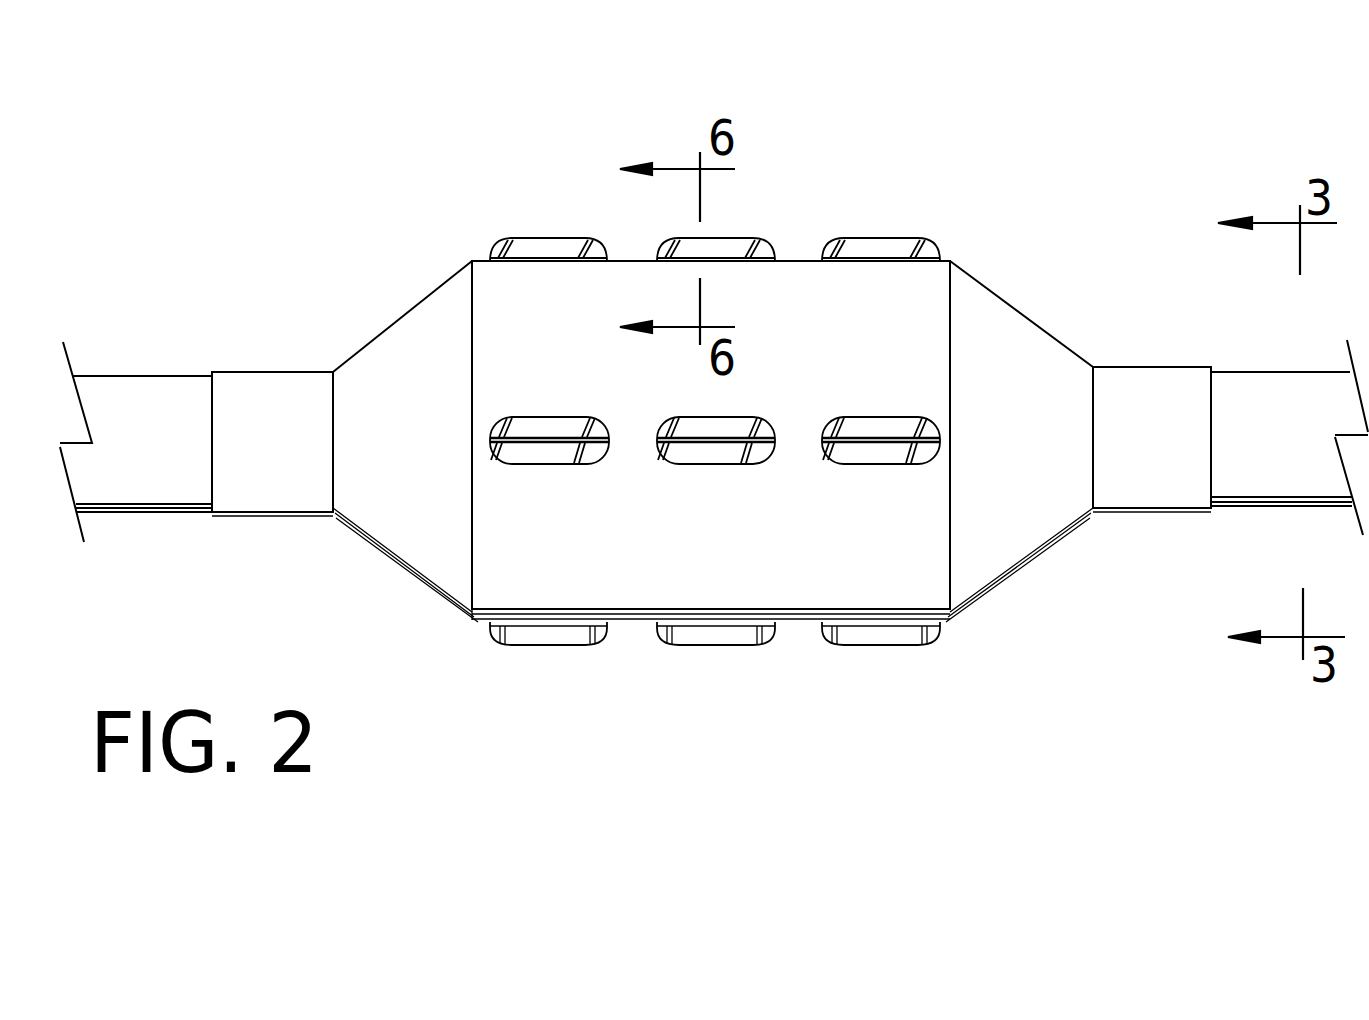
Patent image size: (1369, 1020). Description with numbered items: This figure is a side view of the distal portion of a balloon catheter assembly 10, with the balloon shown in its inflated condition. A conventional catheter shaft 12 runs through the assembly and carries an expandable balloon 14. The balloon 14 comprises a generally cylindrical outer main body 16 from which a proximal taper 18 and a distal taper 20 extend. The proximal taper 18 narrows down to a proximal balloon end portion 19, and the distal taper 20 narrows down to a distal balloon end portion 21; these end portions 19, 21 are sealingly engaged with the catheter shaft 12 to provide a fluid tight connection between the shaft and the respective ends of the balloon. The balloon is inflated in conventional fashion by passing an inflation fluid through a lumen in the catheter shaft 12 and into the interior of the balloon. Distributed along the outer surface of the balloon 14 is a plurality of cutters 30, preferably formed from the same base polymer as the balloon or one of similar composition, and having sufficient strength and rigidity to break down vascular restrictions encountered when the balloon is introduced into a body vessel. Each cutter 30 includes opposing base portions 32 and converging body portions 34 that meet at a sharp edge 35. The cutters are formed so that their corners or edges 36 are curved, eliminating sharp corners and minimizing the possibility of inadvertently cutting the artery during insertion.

The balloon catheter assembly 10 is at (356, 181).
The catheter shaft 12 is at (145, 388).
The expandable balloon 14 is at (456, 246).
The outer main body 16 is at (786, 275).
The proximal taper 18 is at (380, 340).
The proximal balloon end portion 19 is at (268, 382).
The distal taper 20 is at (1028, 338).
The distal balloon end portion 21 is at (1262, 370).
The cutters 30 is at (553, 678).
The base portions 32 is at (416, 577).
The body portions 34 is at (525, 637).
The sharp edge 35 is at (548, 646).
The corners or edges 36 is at (495, 248).